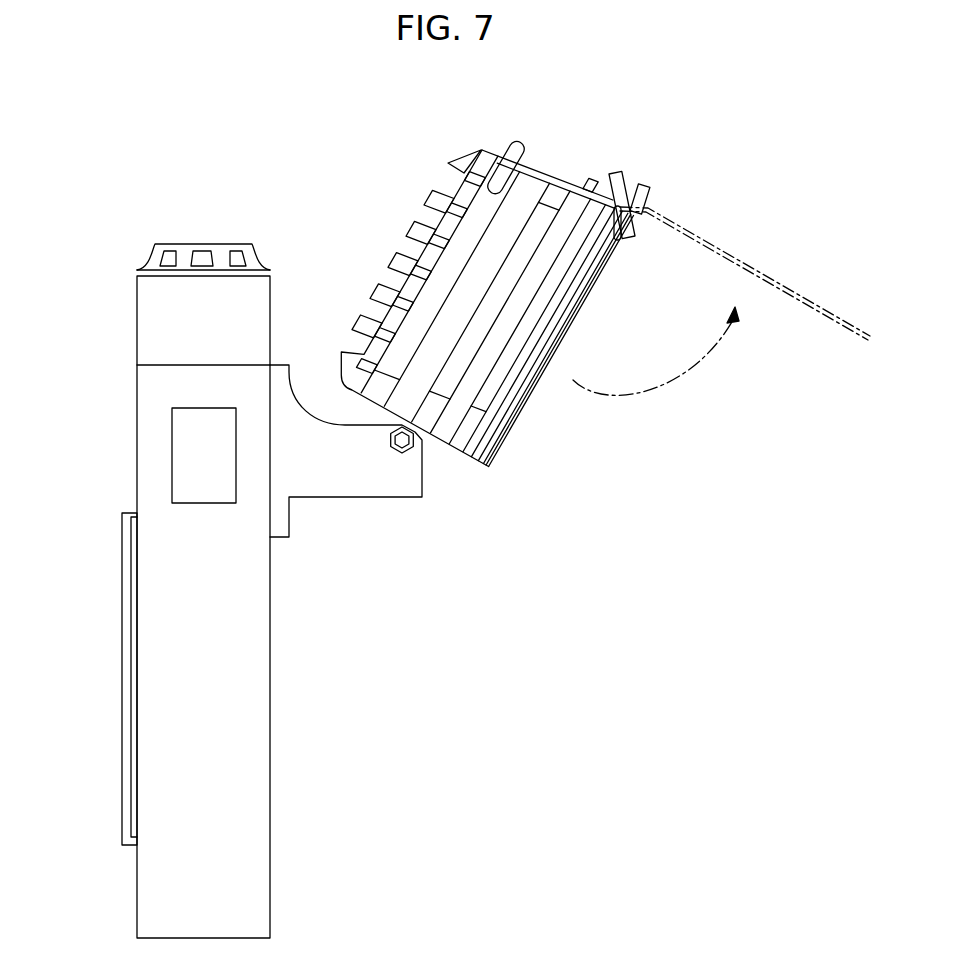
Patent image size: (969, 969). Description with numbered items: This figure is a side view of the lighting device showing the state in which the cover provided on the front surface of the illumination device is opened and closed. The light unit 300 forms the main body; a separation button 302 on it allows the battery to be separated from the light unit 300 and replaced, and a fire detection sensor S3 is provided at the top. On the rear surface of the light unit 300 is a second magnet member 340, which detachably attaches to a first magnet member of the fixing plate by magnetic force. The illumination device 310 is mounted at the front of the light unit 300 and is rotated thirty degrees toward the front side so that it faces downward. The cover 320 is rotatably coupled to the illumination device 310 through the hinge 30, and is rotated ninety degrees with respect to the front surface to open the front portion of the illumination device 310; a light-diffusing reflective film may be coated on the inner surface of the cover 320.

The light unit 300 is at (296, 767).
The separation button 302 is at (185, 460).
The illumination device 310 is at (480, 150).
The cover 320 is at (740, 245).
The hinge 30 is at (618, 207).
The second magnet member 340 is at (122, 754).
The fire detection sensor S3 is at (203, 250).